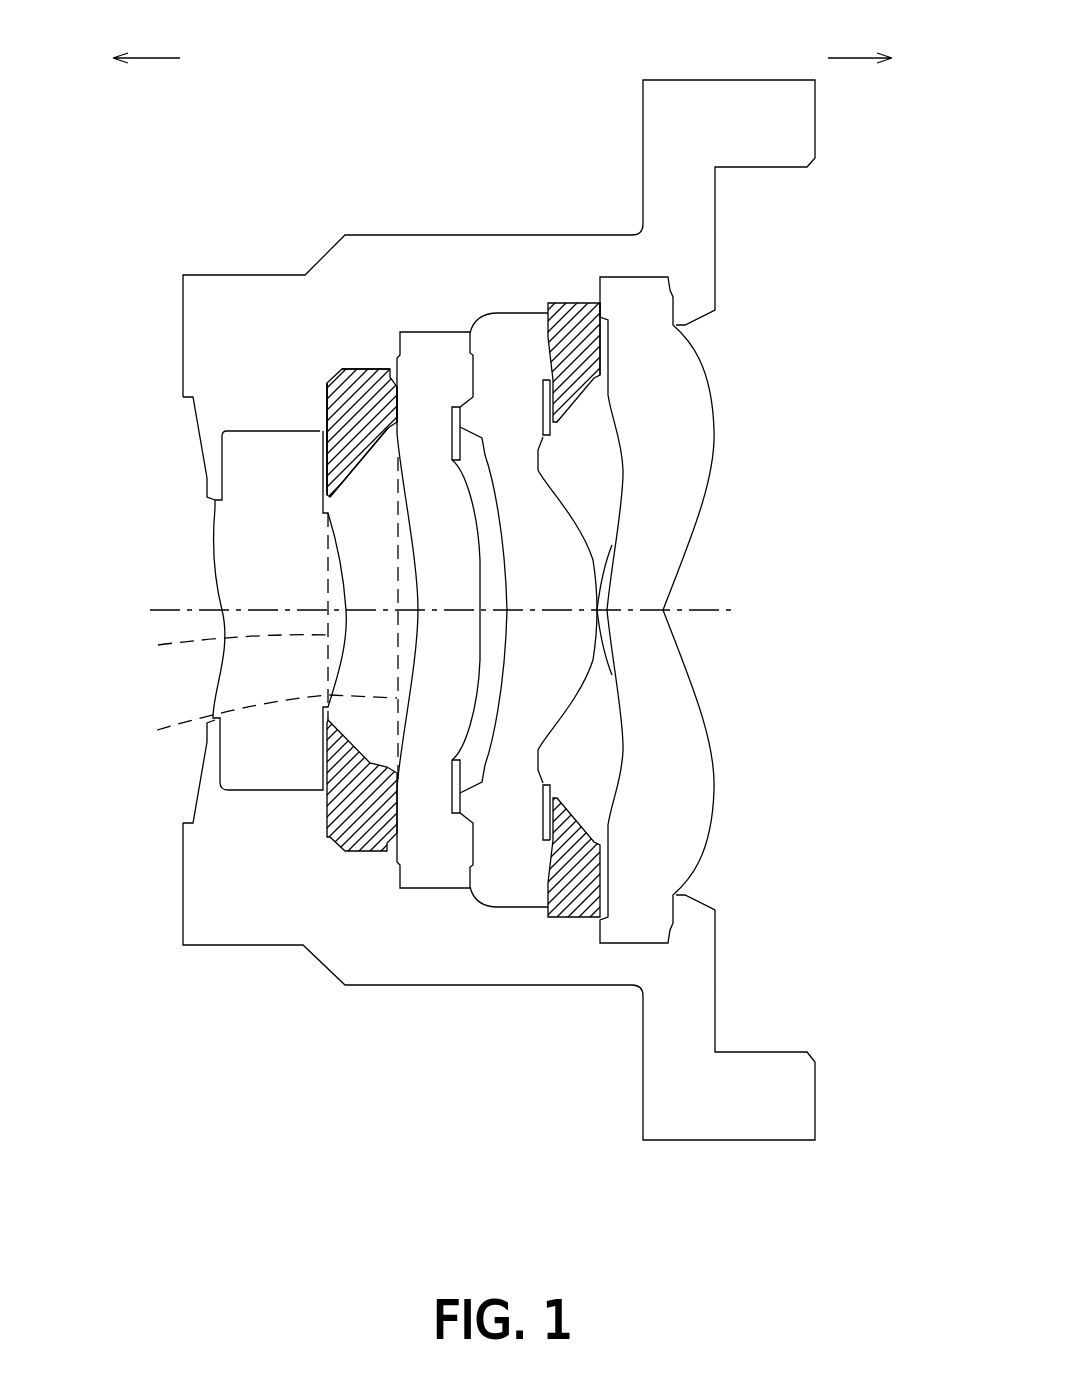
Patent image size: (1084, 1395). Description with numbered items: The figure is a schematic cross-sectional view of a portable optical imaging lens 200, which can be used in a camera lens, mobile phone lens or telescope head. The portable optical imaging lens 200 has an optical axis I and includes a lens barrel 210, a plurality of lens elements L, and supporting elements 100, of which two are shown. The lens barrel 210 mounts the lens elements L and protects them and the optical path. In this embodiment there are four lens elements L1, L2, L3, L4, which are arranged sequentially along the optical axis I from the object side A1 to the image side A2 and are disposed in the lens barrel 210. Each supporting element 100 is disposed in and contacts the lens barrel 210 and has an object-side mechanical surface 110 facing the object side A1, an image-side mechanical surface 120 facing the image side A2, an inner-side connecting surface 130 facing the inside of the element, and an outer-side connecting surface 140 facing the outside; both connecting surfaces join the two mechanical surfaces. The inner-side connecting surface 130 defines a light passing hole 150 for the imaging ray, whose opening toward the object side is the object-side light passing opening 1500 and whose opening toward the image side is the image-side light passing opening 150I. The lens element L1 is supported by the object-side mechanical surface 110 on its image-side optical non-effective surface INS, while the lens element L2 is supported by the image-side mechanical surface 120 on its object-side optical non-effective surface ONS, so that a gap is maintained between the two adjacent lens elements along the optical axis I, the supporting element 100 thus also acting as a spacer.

The portable optical imaging lens 200 is at (903, 1221).
The lens barrel 210 is at (213, 314).
The supporting element 100 is at (365, 378).
The object-side mechanical surface 110 is at (312, 457).
The image-side mechanical surface 120 is at (409, 398).
The inner-side connecting surface 130 is at (358, 492).
The outer-side connecting surface 140 is at (376, 353).
The light passing hole 150 is at (353, 670).
The object-side light passing opening 1500 is at (211, 645).
The image-side light passing opening 150I is at (246, 724).
The image-side optical non-effective surface INS is at (318, 440).
The object-side optical non-effective surface ONS is at (399, 392).
The optical axis I is at (735, 607).
The object side A1 is at (146, 34).
The image side A2 is at (860, 34).
The lens elements L is at (165, 1114).
The lens element L1 is at (275, 752).
The lens element L2 is at (433, 858).
The lens element L3 is at (522, 870).
The lens element L4 is at (632, 905).